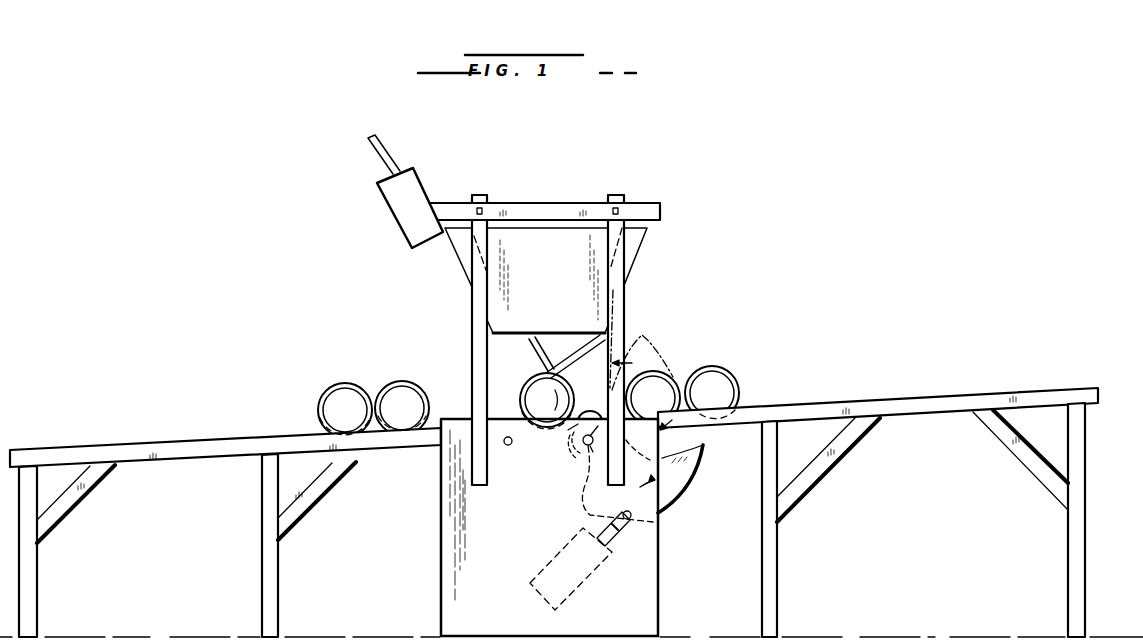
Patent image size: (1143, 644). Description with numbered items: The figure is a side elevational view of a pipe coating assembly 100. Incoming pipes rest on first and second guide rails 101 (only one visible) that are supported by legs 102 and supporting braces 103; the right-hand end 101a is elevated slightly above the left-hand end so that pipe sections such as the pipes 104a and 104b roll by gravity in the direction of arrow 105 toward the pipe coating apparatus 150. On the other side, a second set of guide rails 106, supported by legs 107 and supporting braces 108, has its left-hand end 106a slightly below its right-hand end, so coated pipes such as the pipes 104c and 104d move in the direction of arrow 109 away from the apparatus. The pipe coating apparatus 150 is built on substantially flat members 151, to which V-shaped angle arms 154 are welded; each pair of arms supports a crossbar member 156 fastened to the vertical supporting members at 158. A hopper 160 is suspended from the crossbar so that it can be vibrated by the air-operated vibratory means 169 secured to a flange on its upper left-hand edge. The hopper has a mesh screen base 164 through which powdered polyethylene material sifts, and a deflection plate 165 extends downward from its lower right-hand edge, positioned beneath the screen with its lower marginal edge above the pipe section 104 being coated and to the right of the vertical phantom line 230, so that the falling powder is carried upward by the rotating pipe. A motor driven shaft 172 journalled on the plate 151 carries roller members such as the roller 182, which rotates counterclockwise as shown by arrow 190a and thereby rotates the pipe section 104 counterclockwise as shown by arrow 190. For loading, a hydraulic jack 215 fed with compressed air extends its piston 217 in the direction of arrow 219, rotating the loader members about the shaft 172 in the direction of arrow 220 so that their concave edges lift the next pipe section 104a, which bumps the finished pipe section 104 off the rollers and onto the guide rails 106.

The pipe coating assembly 100 is at (785, 268).
The guide rails 101 is at (938, 400).
The right-hand end of guide rails 101a is at (1105, 372).
The legs 102 is at (770, 578).
The supporting braces 103 is at (811, 488).
The pipe section 104 is at (540, 383).
The pipe section 104a is at (665, 380).
The pipe section 104b is at (726, 382).
The pipe section 104c is at (349, 389).
The pipe section 104d is at (390, 384).
The arrow 105 is at (830, 383).
The guide rails 106 is at (275, 418).
The left-hand end of guide rails 106a is at (8, 452).
The legs 107 is at (30, 593).
The supporting braces 108 is at (68, 512).
The arrow 109 is at (178, 417).
The pipe coating apparatus 150 is at (652, 311).
The flat member 151 is at (513, 548).
The angle arm 154 is at (476, 318).
The crossbar member 156 is at (556, 212).
The fastening location 158 is at (478, 198).
The hopper 160 is at (565, 283).
The base 164 is at (553, 322).
The deflection plate 165 is at (565, 354).
The vibratory means 169 is at (390, 218).
The motor driven shaft 172 is at (583, 448).
The roller member 182 is at (582, 415).
The arrow 190 is at (550, 405).
The arrow 190a is at (527, 449).
The hydraulic jack 215 is at (574, 586).
The piston 217 is at (596, 522).
The arrow 219 is at (604, 535).
The arrow 220 is at (662, 508).
The vertical phantom line 230 is at (540, 345).